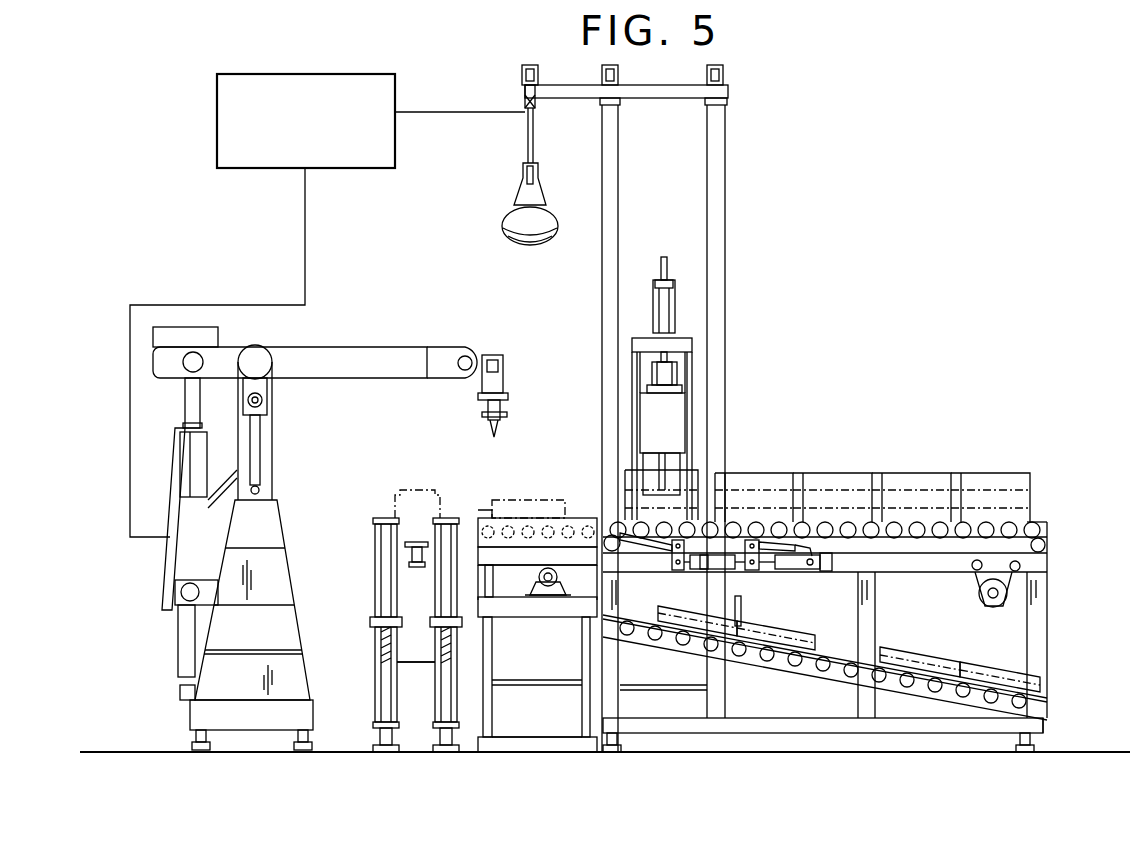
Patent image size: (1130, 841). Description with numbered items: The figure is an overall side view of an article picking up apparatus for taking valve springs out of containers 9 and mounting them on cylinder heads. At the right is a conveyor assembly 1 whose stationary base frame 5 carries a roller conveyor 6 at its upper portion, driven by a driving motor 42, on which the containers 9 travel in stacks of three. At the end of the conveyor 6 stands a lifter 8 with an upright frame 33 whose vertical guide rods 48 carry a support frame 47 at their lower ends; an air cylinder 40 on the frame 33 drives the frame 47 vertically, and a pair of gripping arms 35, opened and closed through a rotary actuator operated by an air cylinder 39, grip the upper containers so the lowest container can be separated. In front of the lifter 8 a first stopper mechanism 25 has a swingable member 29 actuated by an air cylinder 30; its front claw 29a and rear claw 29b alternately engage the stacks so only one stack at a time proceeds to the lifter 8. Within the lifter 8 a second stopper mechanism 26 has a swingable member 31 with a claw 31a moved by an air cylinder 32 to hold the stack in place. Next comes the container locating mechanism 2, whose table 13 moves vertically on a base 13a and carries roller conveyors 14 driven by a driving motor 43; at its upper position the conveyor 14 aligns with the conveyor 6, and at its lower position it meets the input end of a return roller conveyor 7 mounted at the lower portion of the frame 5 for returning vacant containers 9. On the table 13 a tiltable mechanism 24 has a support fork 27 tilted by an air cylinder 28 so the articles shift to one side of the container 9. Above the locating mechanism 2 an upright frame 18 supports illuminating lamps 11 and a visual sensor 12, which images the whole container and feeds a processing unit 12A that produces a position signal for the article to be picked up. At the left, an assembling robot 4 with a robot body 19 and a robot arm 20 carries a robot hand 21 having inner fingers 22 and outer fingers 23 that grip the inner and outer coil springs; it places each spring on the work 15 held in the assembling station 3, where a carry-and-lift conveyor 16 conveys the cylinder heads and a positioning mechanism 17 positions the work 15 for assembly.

The conveyor assembly 1 is at (1045, 522).
The container locating mechanism 2 is at (475, 717).
The assembling station 3 is at (373, 520).
The assembling robot 4 is at (300, 624).
The base frame 5 is at (1048, 612).
The conveyor 6 is at (948, 540).
The return roller conveyor 7 is at (935, 688).
The lifter 8 is at (690, 410).
The container 9 is at (625, 478).
The illuminating lamp 11 is at (506, 245).
The visual sensor 12 is at (535, 100).
The processing unit 12A is at (397, 79).
The table 13 is at (588, 570).
The base 13a is at (582, 690).
The roller conveyor 14 is at (587, 518).
The work 15 is at (395, 495).
The conveyor 16 is at (405, 548).
The positioning mechanism 17 is at (378, 618).
The upright frame 18 is at (602, 262).
The robot body 19 is at (289, 560).
The robot arm 20 is at (362, 348).
The robot hand 21 is at (505, 382).
The inner finger 22 is at (505, 430).
The outer finger 23 is at (480, 426).
The tiltable mechanism 24 is at (500, 575).
The first stopper mechanism 25 is at (725, 567).
The second stopper mechanism 26 is at (676, 567).
The support fork 27 is at (483, 510).
The air cylinder 28 is at (488, 567).
The swingable member 29 is at (750, 570).
The front claw 29a is at (737, 542).
The rear claw 29b is at (805, 557).
The air cylinder 30 is at (795, 572).
The swingable member 31 is at (660, 553).
The claw 31a is at (600, 515).
The air cylinder 32 is at (743, 585).
The upright frame 33 is at (692, 342).
The gripping arm 35 is at (680, 465).
The air cylinder 39 is at (677, 372).
The air cylinder 40 is at (675, 297).
The driving motor 42 is at (996, 608).
The driving motor 43 is at (548, 597).
The support frame 47 is at (640, 412).
The vertical guide rod 48 is at (667, 262).